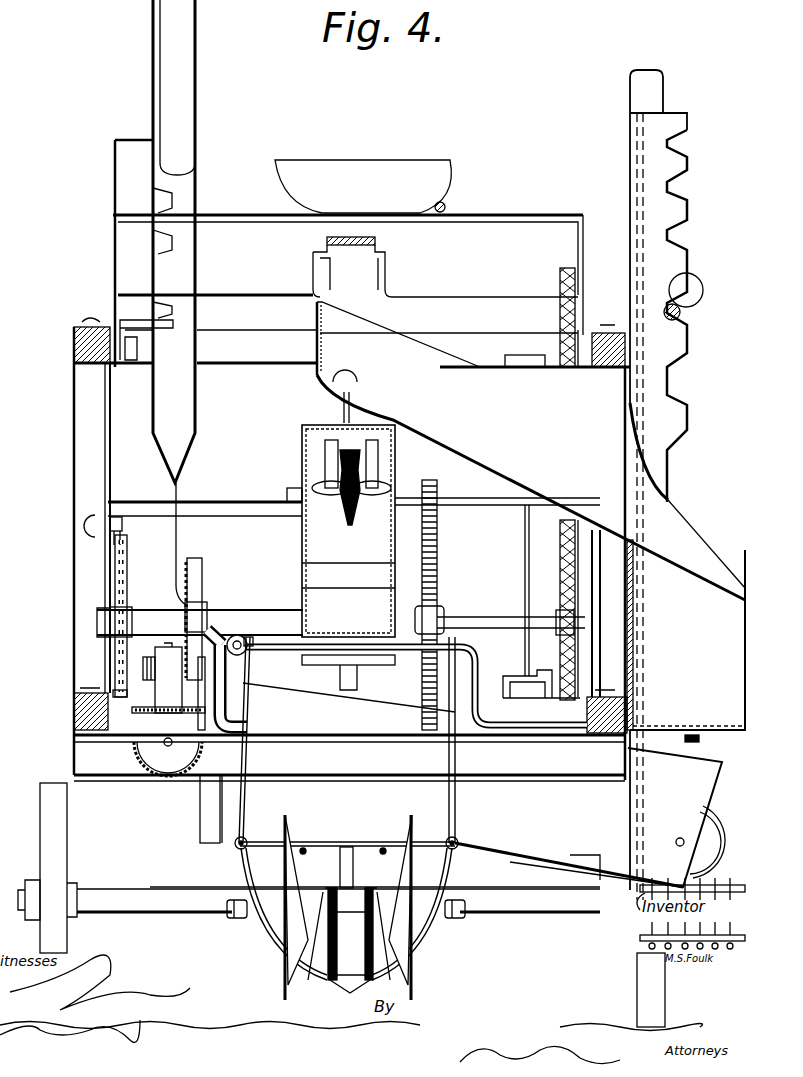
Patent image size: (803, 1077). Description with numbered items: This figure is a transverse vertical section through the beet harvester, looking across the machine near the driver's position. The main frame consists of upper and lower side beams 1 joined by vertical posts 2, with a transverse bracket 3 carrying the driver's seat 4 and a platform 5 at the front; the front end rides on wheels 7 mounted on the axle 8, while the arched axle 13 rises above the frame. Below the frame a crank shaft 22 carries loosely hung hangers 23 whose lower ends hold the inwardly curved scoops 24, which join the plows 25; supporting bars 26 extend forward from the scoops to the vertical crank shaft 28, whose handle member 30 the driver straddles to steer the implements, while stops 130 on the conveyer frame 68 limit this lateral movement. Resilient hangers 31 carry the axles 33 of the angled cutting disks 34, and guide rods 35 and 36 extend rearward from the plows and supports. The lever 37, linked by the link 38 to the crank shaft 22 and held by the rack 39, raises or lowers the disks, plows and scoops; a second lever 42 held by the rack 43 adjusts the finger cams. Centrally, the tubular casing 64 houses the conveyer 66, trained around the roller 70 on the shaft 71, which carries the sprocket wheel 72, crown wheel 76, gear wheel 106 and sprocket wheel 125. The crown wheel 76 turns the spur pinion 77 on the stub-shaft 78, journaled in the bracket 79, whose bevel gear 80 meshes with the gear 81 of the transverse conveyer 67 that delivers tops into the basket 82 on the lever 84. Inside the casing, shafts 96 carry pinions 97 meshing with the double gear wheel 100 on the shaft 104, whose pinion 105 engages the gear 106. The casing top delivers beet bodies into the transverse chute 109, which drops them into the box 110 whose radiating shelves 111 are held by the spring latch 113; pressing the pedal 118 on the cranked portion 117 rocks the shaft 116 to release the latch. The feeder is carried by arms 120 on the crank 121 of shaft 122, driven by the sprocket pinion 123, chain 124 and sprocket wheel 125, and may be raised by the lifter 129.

The side beams 1 is at (74, 357).
The vertical posts 2 is at (108, 435).
The bracket 3 is at (348, 264).
The driver's seat 4 is at (363, 186).
The platform 5 is at (240, 495).
The wheels 7 is at (60, 865).
The axle 8 is at (145, 873).
The arched axle 13 is at (122, 530).
The crank shaft 22 is at (540, 710).
The suspending rods or hangers 23 is at (258, 758).
The scoops or shovels 24 is at (458, 870).
The plows 25 is at (349, 991).
The supporting bars 26 is at (238, 848).
The vertical crank shaft 28 is at (345, 675).
The handle member 30 is at (340, 400).
The hangers or brackets 31 is at (300, 950).
The axles 33 is at (245, 915).
The cutting disks 34 is at (288, 995).
The guide rods 35 is at (340, 860).
The guide rods 36 is at (372, 842).
The lever 37 is at (185, 447).
The link 38 is at (205, 610).
The segmental holding bar or rack 39 is at (130, 178).
The lever 42 is at (682, 310).
The rack or holding bar 43 is at (675, 430).
The tubular casing 64 is at (290, 575).
The endless belt or conveyer 66 is at (365, 625).
The transverse conveyer 67 is at (710, 805).
The conveyer frame 68 is at (596, 840).
The roller 70 is at (334, 605).
The shaft 71 is at (412, 600).
The sprocket wheel 72 is at (127, 560).
The crown wheel 76 is at (203, 562).
The spur pinion 77 is at (143, 658).
The vertical stub-shaft 78 is at (168, 647).
The bracket 79 is at (90, 722).
The bevel gear 80 is at (215, 735).
The bevel gear 81 is at (150, 748).
The basket or shelf 82 is at (640, 935).
The lever 84 is at (627, 92).
The shafts 96 is at (351, 464).
The pinions 97 is at (342, 512).
The double gear wheel 100 is at (348, 557).
The transverse shaft 104 is at (292, 488).
The pinion 105 is at (497, 490).
The gear wheel 106 is at (437, 545).
The transverse chute 109 is at (531, 451).
The box 110 is at (686, 635).
The shelves or plates 111 is at (655, 722).
The spring latch 113 is at (708, 740).
The shaft 116 is at (482, 690).
The cranked portion 117 is at (539, 686).
The rod or pedal 118 is at (527, 560).
The arms 120 is at (327, 243).
The crank 121 is at (385, 270).
The shaft 122 is at (478, 285).
The sprocket pinion 123 is at (560, 285).
The sprocket chain 124 is at (560, 325).
The sprocket wheel 125 is at (555, 608).
The lifter 129 is at (444, 203).
The stops 130 is at (200, 830).